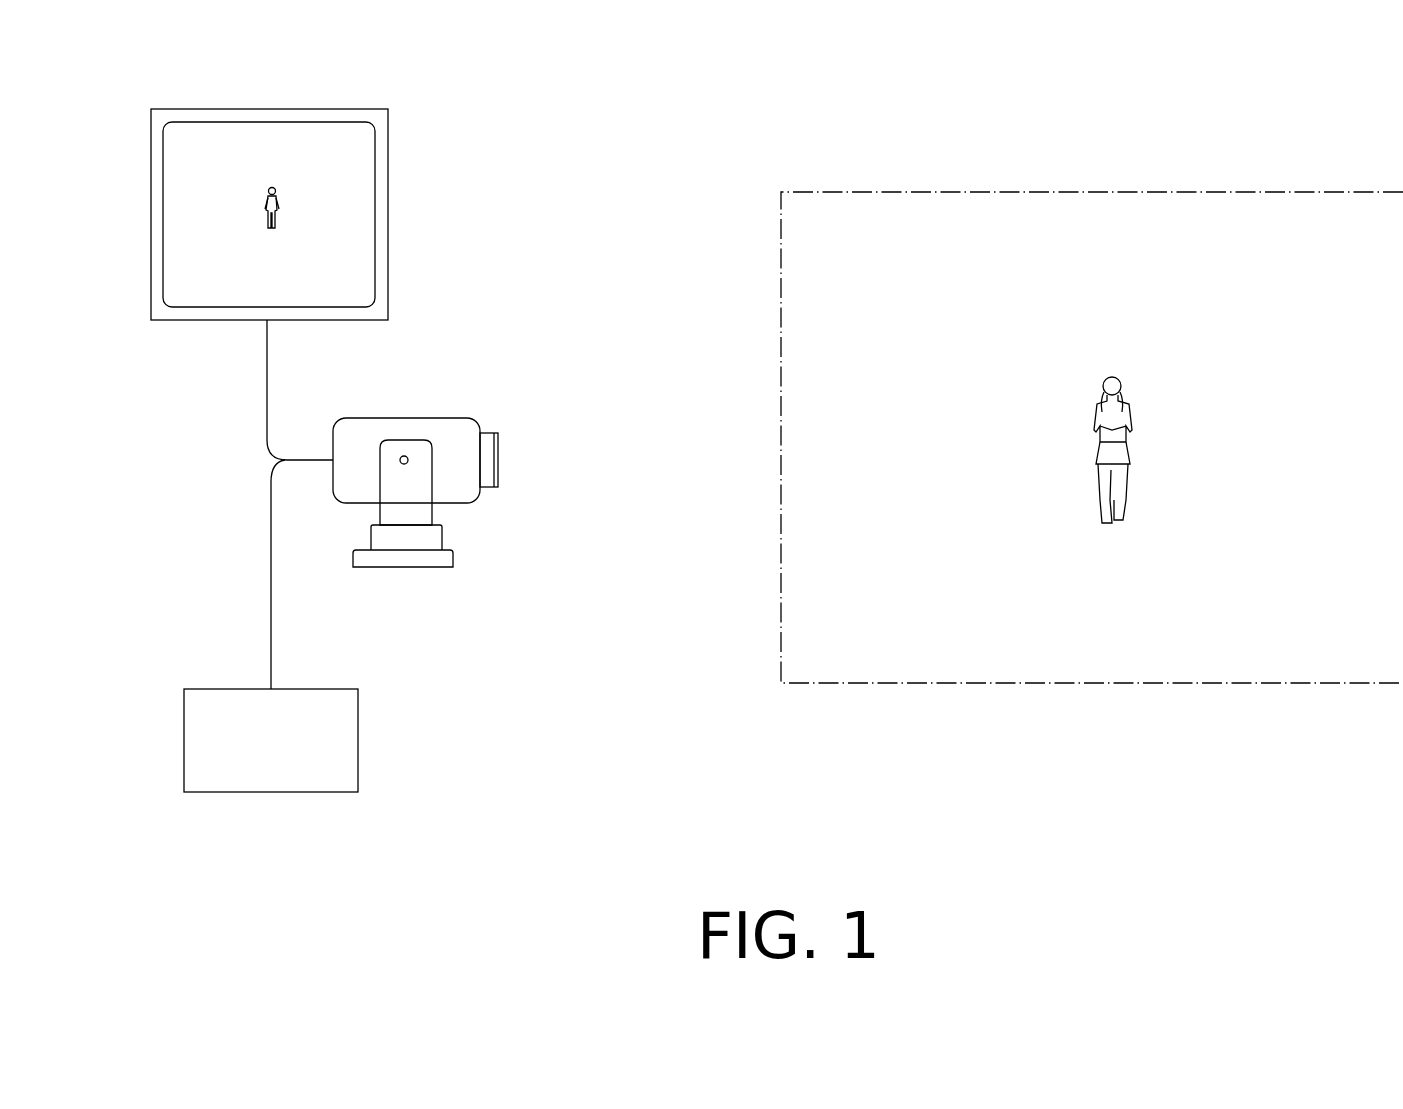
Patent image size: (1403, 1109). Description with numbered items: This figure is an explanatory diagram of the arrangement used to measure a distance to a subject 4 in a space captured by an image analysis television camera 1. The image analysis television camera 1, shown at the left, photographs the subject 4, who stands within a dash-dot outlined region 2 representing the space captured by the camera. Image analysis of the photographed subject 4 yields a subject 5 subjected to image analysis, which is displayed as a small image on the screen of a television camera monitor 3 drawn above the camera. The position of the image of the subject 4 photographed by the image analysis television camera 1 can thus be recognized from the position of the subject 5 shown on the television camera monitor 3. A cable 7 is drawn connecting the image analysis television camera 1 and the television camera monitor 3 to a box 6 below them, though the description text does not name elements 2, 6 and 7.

The image analysis television camera 1 is at (455, 418).
The imaging area 2 is at (933, 192).
The television camera monitor 3 is at (259, 104).
The subject 4 is at (1093, 393).
The subject subjected to image analysis 5 is at (283, 203).
The control unit 6 is at (362, 736).
The cable 7 is at (267, 402).